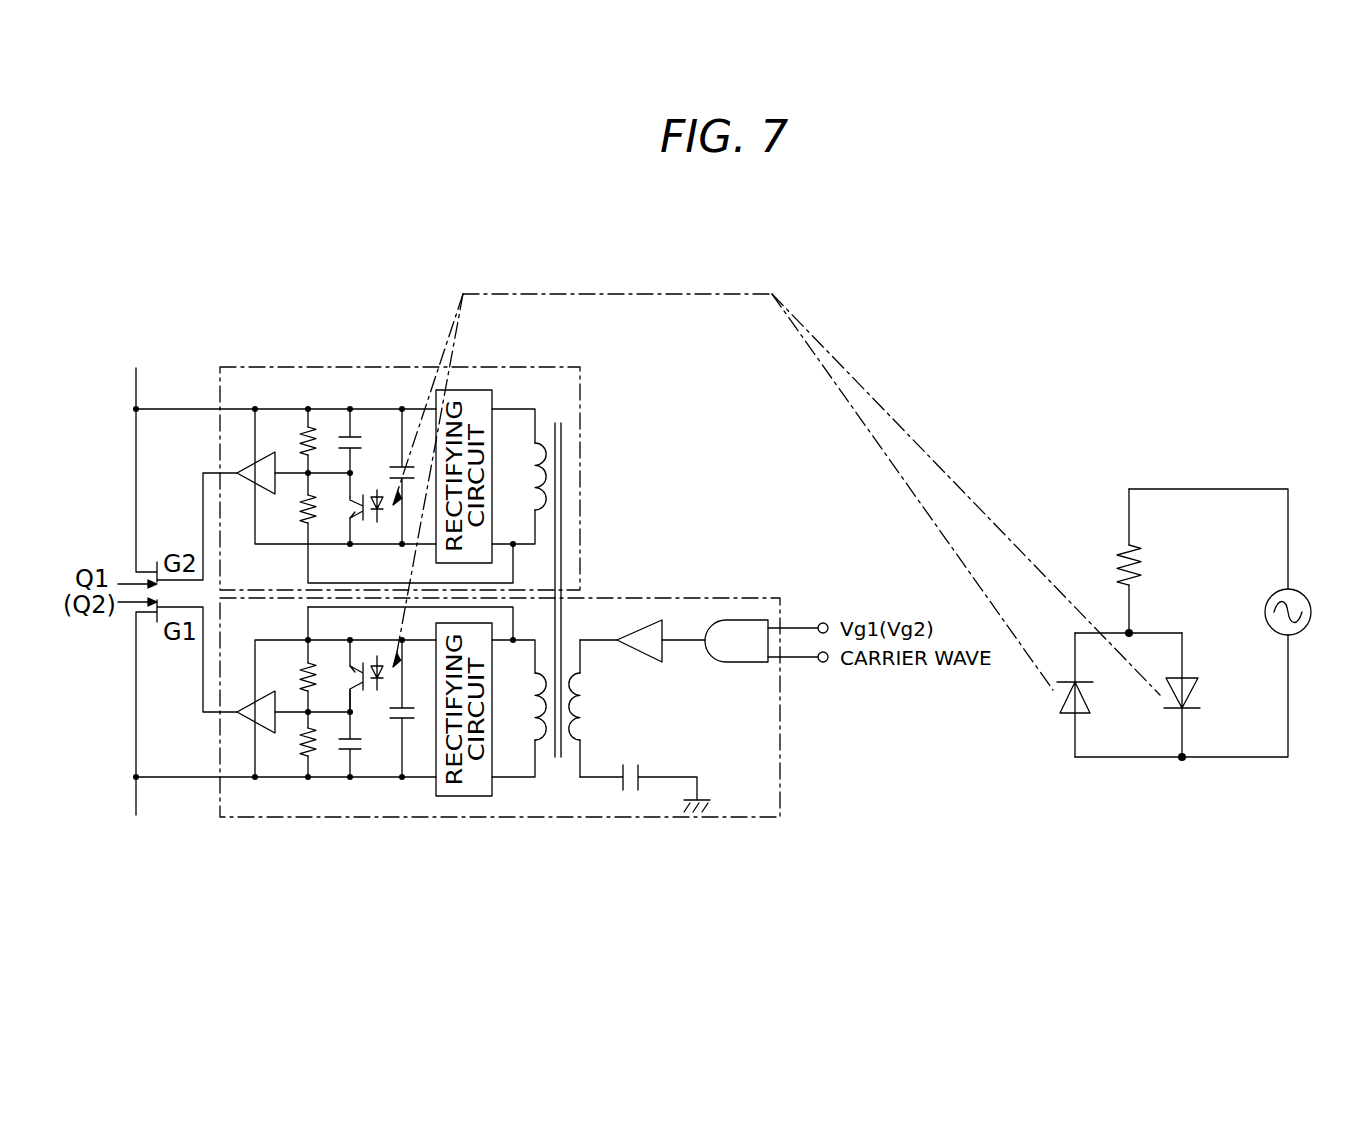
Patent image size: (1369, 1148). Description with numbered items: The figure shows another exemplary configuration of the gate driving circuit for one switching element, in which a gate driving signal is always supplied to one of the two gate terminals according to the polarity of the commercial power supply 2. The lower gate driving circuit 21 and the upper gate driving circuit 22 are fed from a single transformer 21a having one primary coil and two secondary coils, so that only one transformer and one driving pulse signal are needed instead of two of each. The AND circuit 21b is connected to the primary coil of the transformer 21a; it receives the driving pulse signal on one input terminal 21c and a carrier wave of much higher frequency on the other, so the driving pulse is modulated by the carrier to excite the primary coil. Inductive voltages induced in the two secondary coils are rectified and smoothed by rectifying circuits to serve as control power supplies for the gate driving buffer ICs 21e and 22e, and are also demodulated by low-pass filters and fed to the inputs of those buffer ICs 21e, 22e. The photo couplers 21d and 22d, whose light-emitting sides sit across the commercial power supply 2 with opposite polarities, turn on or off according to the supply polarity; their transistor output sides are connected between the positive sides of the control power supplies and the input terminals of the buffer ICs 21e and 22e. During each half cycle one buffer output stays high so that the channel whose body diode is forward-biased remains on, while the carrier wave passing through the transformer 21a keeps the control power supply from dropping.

The commercial power supply 2 is at (1311, 596).
The gate driving circuit 21 is at (468, 818).
The transformer 21a is at (558, 765).
The AND circuit 21b is at (742, 656).
The input terminal 21c is at (823, 622).
The photo coupler 21d is at (373, 703).
The gate driving buffer IC 21e is at (272, 727).
The gate driving circuit 22 is at (511, 366).
The photo coupler 22d is at (370, 483).
The gate driving buffer IC 22e is at (267, 458).